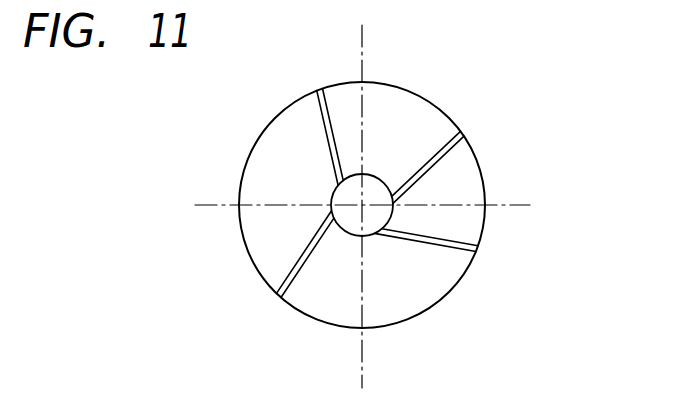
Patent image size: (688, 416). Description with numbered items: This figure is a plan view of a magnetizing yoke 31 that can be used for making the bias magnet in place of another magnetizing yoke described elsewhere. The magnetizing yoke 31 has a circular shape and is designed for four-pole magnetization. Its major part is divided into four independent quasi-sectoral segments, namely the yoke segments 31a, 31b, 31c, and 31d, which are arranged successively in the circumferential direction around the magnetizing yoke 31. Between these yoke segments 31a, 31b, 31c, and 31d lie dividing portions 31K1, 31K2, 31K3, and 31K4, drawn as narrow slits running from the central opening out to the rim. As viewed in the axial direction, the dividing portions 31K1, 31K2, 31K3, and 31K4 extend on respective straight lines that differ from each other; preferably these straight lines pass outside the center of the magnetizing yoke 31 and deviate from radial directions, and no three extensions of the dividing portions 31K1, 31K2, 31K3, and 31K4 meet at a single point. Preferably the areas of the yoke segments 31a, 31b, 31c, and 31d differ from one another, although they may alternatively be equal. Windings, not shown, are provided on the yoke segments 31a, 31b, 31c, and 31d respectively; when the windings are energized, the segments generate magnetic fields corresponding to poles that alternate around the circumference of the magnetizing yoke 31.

The magnetizing yoke 31 is at (402, 83).
The yoke segment 31a is at (422, 125).
The yoke segment 31b is at (458, 175).
The yoke segment 31c is at (403, 298).
The yoke segment 31d is at (263, 240).
The dividing portion 31K1 is at (447, 137).
The dividing portion 31K2 is at (448, 254).
The dividing portion 31K3 is at (298, 277).
The dividing portion 31K4 is at (320, 127).